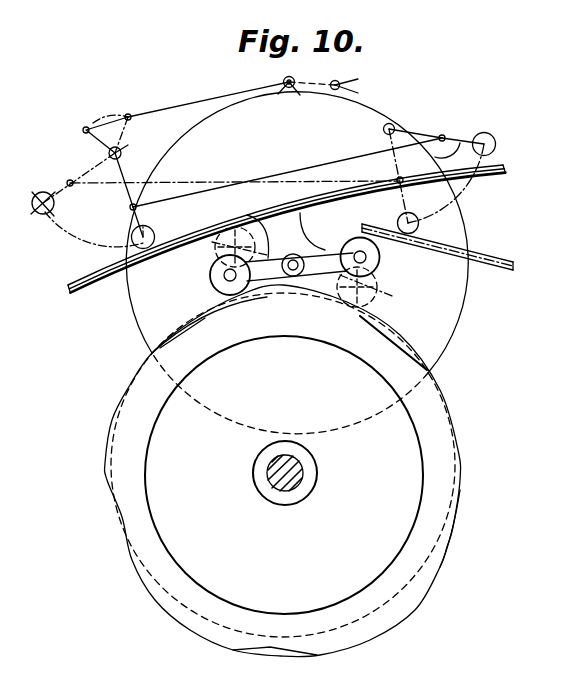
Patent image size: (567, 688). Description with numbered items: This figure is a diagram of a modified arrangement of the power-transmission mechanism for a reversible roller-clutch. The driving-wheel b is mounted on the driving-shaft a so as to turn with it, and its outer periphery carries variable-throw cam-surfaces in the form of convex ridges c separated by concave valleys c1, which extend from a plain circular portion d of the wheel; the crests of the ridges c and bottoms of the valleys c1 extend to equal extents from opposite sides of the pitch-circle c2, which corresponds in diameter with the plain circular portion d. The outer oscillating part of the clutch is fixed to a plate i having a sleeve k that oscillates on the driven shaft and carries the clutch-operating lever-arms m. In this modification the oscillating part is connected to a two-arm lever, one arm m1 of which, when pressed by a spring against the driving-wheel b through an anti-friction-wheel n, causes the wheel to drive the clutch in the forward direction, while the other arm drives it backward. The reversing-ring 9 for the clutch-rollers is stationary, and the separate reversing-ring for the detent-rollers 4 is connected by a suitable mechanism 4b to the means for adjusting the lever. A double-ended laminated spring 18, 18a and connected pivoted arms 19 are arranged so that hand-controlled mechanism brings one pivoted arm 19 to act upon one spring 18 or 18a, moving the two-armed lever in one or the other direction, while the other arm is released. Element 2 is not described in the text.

The connecting bar between rollers 2 is at (302, 254).
The detent-rollers 4 is at (243, 90).
The mechanism 4b is at (110, 160).
The reversing-ring 9 is at (366, 108).
The laminated spring 18 is at (158, 256).
The laminated spring 18a is at (497, 246).
The pivoted arm 19 is at (90, 172).
The driving-shaft a is at (300, 473).
The driving-wheel b is at (284, 475).
The cam-like ridges c is at (481, 420).
The valleys c1 is at (190, 325).
The pitch-circle c2 is at (184, 327).
The plain circular portion d is at (452, 535).
The plate i is at (297, 263).
The sleeve k is at (293, 255).
The lever-arms m is at (349, 273).
The lever arm m1 is at (241, 261).
The anti-friction-wheels n is at (224, 279).